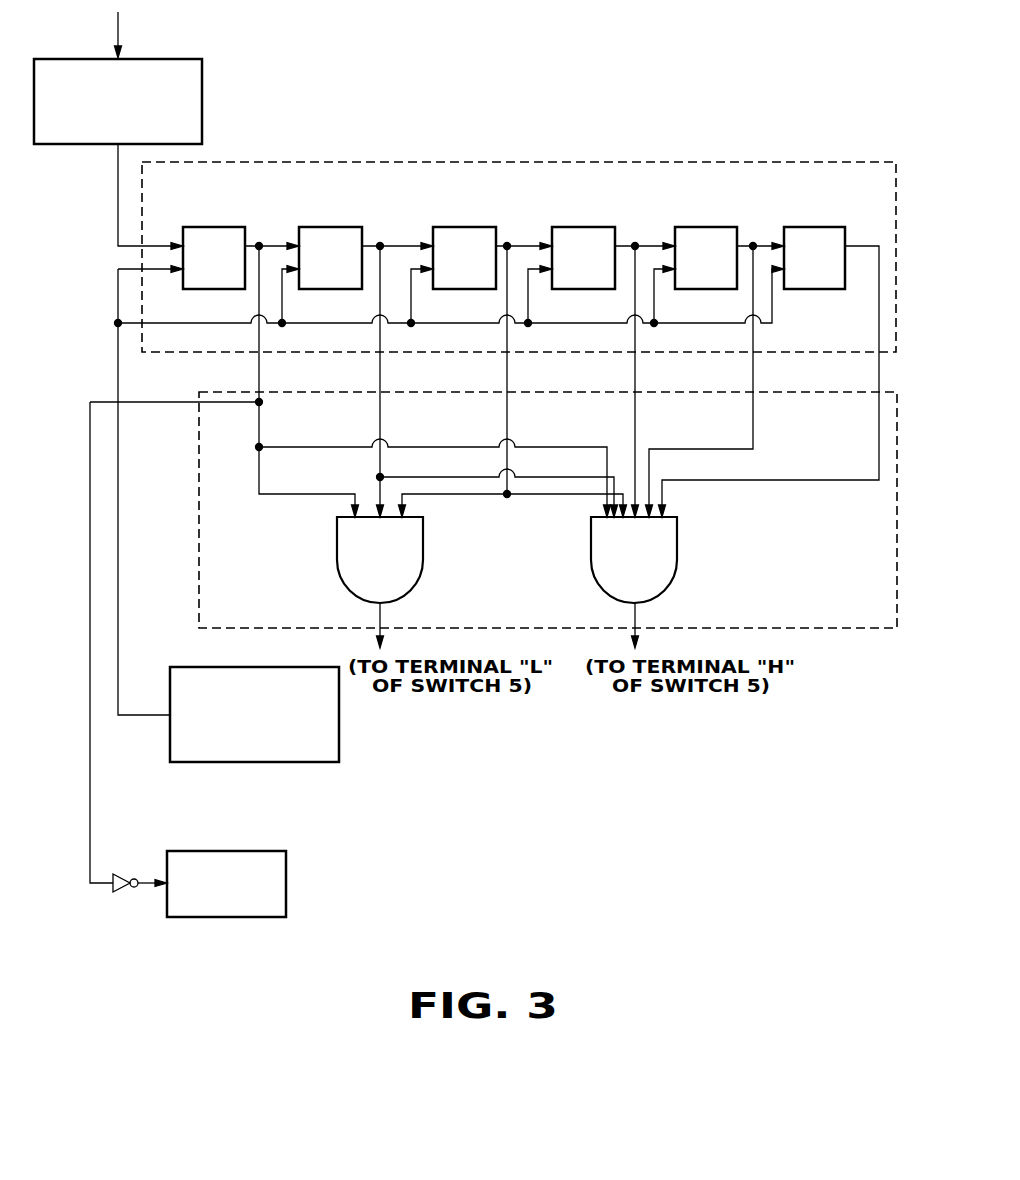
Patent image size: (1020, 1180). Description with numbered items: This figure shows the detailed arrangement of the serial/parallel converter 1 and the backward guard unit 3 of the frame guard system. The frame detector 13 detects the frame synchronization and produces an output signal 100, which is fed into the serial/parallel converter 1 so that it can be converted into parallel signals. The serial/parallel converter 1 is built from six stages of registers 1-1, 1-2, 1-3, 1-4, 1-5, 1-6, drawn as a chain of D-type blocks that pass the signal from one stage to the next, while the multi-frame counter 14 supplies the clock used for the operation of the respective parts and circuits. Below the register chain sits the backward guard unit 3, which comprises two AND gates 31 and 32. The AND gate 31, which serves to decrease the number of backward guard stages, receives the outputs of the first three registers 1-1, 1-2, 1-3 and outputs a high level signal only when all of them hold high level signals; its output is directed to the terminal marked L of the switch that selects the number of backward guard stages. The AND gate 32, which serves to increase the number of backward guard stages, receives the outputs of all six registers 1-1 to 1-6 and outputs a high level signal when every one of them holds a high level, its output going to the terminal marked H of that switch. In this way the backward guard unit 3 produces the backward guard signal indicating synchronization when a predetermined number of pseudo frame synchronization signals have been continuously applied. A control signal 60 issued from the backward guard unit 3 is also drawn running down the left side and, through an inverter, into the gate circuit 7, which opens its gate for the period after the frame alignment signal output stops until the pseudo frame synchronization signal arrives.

The frame detector 13 is at (202, 106).
The output signal 100 is at (132, 243).
The serial/parallel converter 1 is at (300, 162).
The register 1-1 is at (210, 227).
The register 1-2 is at (326, 227).
The register 1-3 is at (460, 227).
The register 1-4 is at (579, 227).
The register 1-5 is at (702, 227).
The register 1-6 is at (810, 227).
The backward guard unit 3 is at (197, 598).
The AND gate 31 is at (423, 545).
The AND gate 32 is at (677, 548).
The multi-frame counter 14 is at (272, 762).
The control signal 60 is at (90, 832).
The gate circuit 7 is at (286, 887).